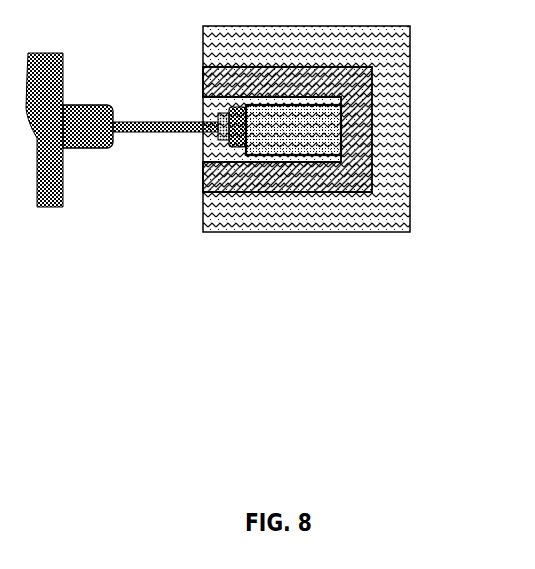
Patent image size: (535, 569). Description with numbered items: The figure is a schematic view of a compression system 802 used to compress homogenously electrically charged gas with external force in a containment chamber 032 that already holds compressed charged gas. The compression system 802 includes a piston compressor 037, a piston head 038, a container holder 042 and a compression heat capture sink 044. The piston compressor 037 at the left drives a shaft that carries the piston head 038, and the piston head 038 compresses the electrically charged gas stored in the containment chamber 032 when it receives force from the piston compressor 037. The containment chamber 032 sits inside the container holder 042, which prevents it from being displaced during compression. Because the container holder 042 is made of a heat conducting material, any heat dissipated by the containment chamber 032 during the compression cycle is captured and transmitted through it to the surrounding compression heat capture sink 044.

The compression heat capture sink 044 is at (395, 68).
The container holder 042 is at (358, 172).
The containment chamber 032 is at (310, 131).
The piston head 038 is at (217, 121).
The piston compressor 037 is at (87, 148).
The compression system 802 is at (370, 250).